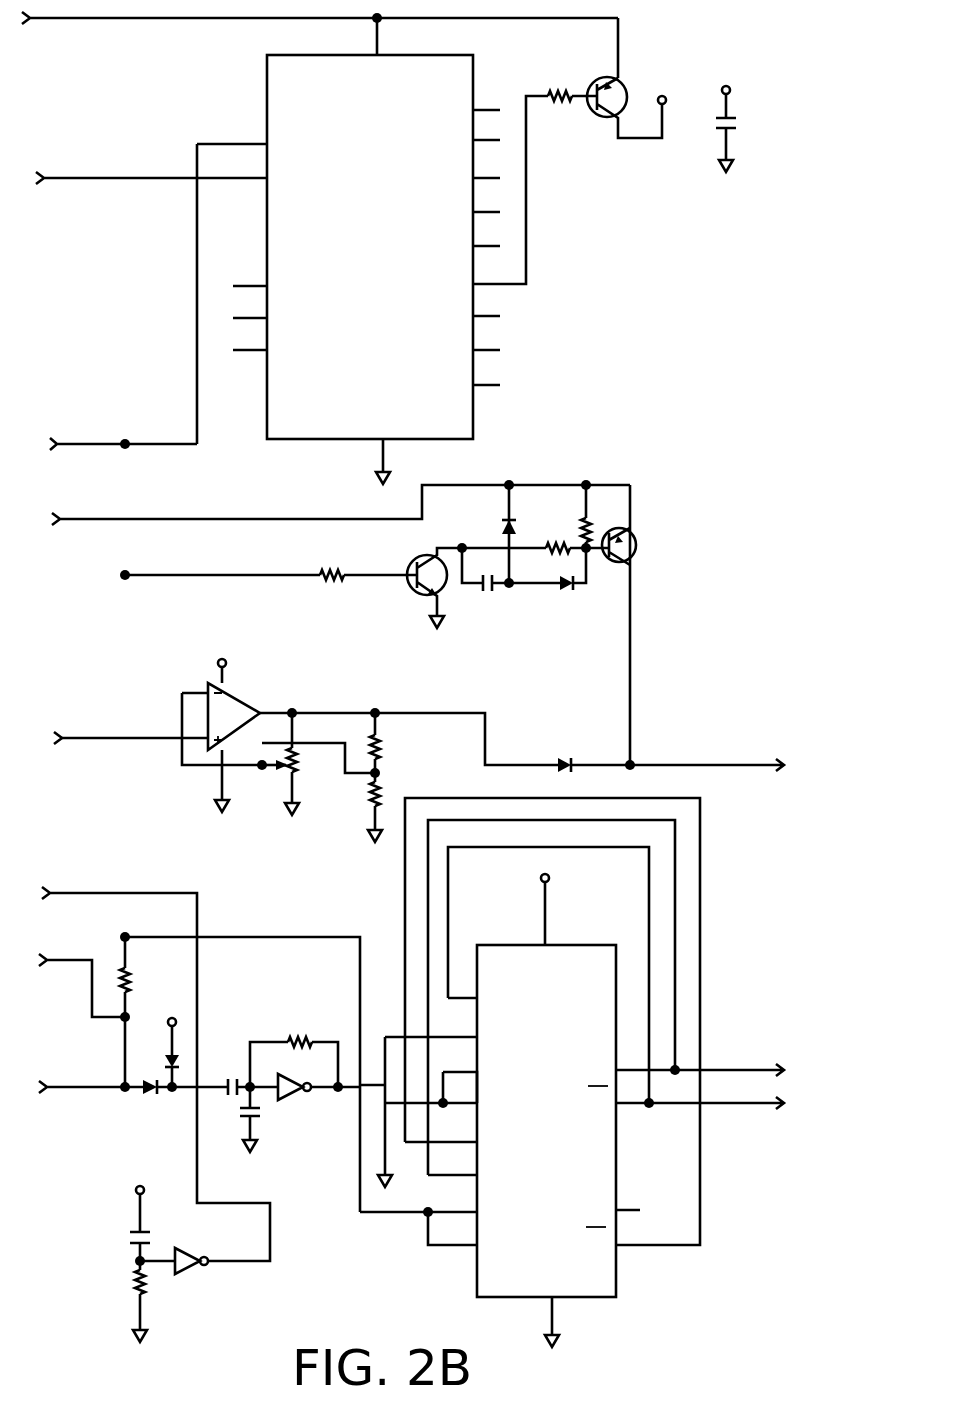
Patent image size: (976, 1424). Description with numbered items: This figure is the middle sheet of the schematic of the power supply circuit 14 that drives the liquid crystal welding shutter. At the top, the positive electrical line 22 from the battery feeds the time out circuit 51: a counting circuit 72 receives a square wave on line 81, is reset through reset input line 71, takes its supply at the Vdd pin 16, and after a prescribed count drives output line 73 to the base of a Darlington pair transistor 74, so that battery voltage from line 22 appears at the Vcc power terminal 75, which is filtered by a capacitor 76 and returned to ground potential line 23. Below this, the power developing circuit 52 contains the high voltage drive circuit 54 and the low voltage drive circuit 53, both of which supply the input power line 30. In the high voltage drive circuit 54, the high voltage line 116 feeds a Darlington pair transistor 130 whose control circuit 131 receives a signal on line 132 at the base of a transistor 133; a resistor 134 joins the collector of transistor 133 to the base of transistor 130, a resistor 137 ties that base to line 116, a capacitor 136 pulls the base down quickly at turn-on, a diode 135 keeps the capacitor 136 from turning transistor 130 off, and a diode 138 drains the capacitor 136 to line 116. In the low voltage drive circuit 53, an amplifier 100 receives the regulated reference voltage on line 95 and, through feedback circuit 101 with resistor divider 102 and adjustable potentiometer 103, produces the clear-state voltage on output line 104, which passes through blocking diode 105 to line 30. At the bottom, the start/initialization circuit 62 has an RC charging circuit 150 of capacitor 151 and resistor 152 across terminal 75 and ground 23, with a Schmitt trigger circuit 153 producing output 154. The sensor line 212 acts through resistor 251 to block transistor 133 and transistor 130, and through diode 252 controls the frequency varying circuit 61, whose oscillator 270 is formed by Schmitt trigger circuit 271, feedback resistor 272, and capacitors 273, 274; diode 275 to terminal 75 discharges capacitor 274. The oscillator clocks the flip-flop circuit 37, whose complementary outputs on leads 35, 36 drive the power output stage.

The power supply circuit 14 is at (607, 350).
The Vdd supply lead 16 is at (377, 34).
The positive electrical line 22 is at (80, 18).
The ground potential line 23 is at (728, 175).
The input power line 30 is at (732, 766).
The lead 35 is at (693, 1068).
The lead 36 is at (760, 1105).
The flip-flop circuit 37 is at (612, 1270).
The time out circuit 51 is at (592, 42).
The power developing circuit 52 is at (665, 470).
The low voltage drive circuit 53 is at (600, 678).
The high voltage drive circuit 54 is at (560, 435).
The frequency varying circuit 61 is at (355, 1128).
The start/initialization circuit 62 is at (280, 1252).
The reset input line 71 is at (218, 144).
The counting circuit 72 is at (460, 190).
The output line 73 is at (558, 104).
The Darlington pair transistor 74 is at (598, 117).
The Vcc power terminal 75 is at (665, 108).
The capacitor 76 is at (728, 130).
The line 81 is at (145, 178).
The line 95 is at (100, 740).
The amplifier 100 is at (268, 645).
The feedback circuit 101 is at (335, 822).
The resistor divider 102 is at (390, 766).
The adjustable potentiometer 103 is at (283, 778).
The output line 104 is at (487, 732).
The blocking diode 105 is at (565, 758).
The high voltage line 116 is at (92, 521).
The Darlington pair transistor 130 is at (637, 541).
The control circuit 131 is at (600, 585).
The line 132 is at (198, 574).
The transistor 133 is at (410, 562).
The resistor 134 is at (558, 543).
The diode 135 is at (567, 594).
The capacitor 136 is at (486, 594).
The resistor 137 is at (585, 520).
The diode 138 is at (505, 528).
The RC charging circuit 150 is at (152, 1185).
The capacitor 151 is at (128, 1238).
The resistor 152 is at (133, 1282).
The Schmitt trigger circuit 153 is at (188, 1252).
The output 154 is at (95, 895).
The line 212 is at (125, 1095).
The resistor 251 is at (165, 962).
The diode 252 is at (152, 1096).
The oscillator 270 is at (322, 962).
The Schmitt trigger circuit 271 is at (300, 1095).
The feedback resistor 272 is at (305, 1040).
The capacitor 273 is at (255, 1118).
The capacitor 274 is at (232, 1078).
The diode 275 is at (165, 1062).